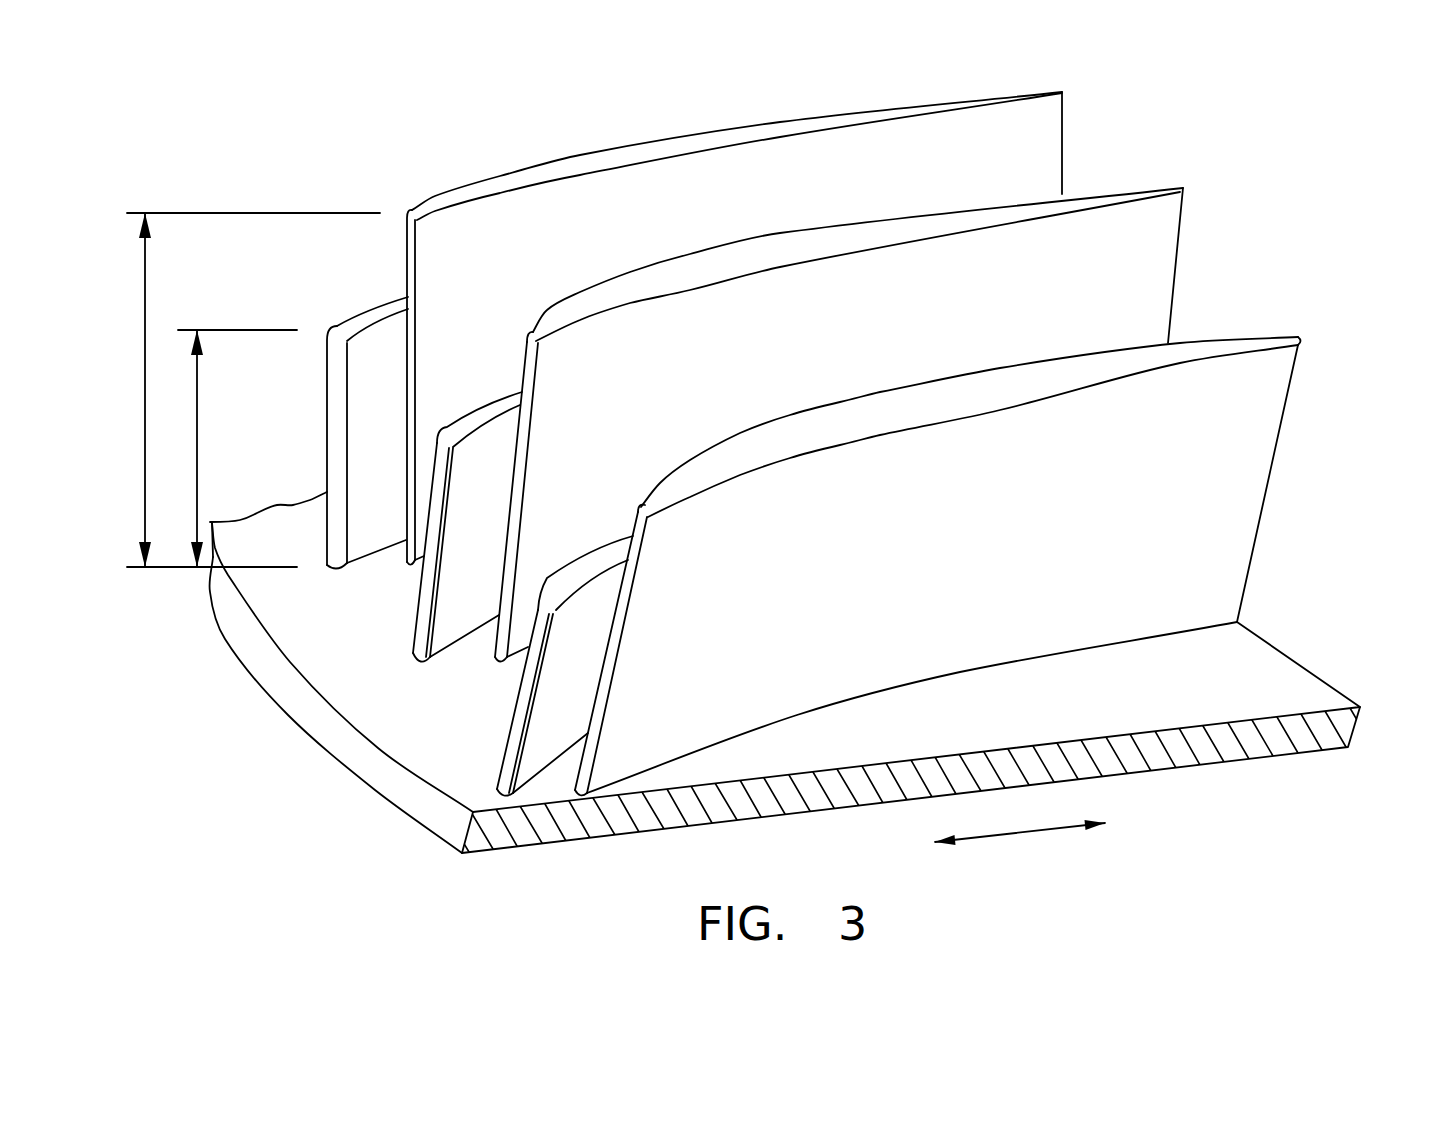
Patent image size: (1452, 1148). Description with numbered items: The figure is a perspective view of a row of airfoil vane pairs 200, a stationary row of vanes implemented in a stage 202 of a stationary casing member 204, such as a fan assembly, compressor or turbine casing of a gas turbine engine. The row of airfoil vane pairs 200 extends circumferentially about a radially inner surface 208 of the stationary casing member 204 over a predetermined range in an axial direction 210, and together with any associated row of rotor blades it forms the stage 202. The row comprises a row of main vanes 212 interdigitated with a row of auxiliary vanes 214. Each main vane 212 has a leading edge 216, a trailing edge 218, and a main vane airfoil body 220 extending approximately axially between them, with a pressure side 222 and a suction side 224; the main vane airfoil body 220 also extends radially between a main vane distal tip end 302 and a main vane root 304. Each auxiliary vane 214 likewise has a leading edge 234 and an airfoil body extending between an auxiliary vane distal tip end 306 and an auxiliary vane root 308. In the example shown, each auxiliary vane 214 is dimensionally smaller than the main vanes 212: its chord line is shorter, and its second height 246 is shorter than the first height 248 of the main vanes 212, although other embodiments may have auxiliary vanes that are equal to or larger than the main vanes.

The row of airfoil vane pairs 200 is at (1302, 431).
The stage 202 is at (540, 102).
The stationary casing member 204 is at (1333, 730).
The radially inner surface 208 is at (1198, 699).
The axial direction 210 is at (1022, 832).
The main vane 212 is at (1260, 377).
The auxiliary vane 214 is at (353, 371).
The leading edge 216 is at (405, 255).
The trailing edge 218 is at (1255, 540).
The main vane airfoil body 220 is at (1161, 190).
The pressure side 222 is at (1235, 473).
The suction side 224 is at (1283, 330).
The leading edge 234 is at (327, 447).
The second height 246 is at (199, 410).
The first height 248 is at (146, 285).
The main vane distal tip end 302 is at (697, 470).
The main vane root 304 is at (890, 652).
The auxiliary vane distal tip end 306 is at (458, 430).
The auxiliary vane root 308 is at (462, 645).